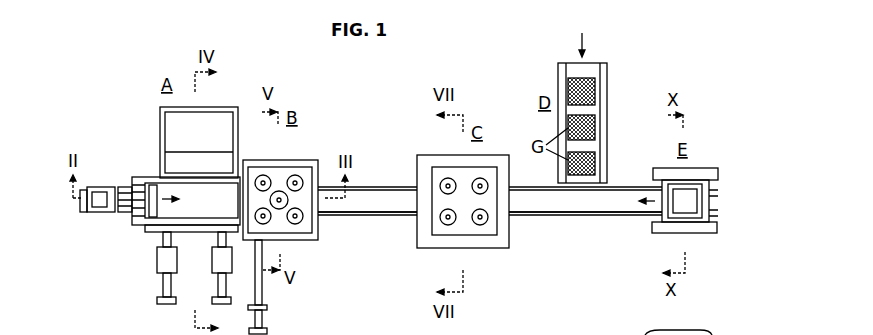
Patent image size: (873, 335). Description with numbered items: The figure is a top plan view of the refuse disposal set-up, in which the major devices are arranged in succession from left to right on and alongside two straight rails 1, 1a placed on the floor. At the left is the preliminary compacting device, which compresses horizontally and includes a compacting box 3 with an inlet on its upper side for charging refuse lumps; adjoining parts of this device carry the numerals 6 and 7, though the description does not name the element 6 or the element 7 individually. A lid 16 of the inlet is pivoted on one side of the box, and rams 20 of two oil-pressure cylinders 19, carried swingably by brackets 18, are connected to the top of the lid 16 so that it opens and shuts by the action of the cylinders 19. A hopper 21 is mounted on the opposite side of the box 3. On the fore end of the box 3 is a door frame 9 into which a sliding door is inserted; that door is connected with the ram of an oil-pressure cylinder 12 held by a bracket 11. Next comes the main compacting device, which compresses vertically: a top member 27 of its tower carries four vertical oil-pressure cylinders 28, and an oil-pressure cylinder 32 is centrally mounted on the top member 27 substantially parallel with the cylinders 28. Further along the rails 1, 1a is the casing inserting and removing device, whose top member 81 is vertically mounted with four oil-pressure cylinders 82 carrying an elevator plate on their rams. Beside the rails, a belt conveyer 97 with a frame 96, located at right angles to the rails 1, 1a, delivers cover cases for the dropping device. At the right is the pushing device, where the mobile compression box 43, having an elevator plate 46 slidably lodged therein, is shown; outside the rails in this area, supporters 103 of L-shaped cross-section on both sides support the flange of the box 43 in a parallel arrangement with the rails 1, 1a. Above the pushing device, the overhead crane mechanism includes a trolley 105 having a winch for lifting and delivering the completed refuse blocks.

The rail 1 is at (389, 188).
The rail 1a is at (380, 215).
The compacting box 3 is at (203, 187).
The gate 6 is at (150, 185).
The drive unit 7 is at (100, 198).
The door frame 9 is at (255, 255).
The bracket 11 is at (266, 310).
The oil-pressure cylinder 12 is at (262, 290).
The lid 16 is at (196, 232).
The bracket 18 is at (157, 263).
The oil-pressure cylinder 19 is at (215, 283).
The ram 20 is at (162, 246).
The hopper 21 is at (222, 112).
The top member 27 is at (312, 162).
The oil-pressure cylinder 28 is at (295, 176).
The oil-pressure cylinder 32 is at (279, 205).
The compression box 43 is at (708, 222).
The elevator plate 46 is at (690, 193).
The top member 81 is at (497, 160).
The oil-pressure cylinder 82 is at (480, 178).
The frame 96 is at (603, 121).
The belt conveyer 97 is at (588, 68).
The supporter 103 is at (655, 172).
The trolley 105 is at (670, 334).